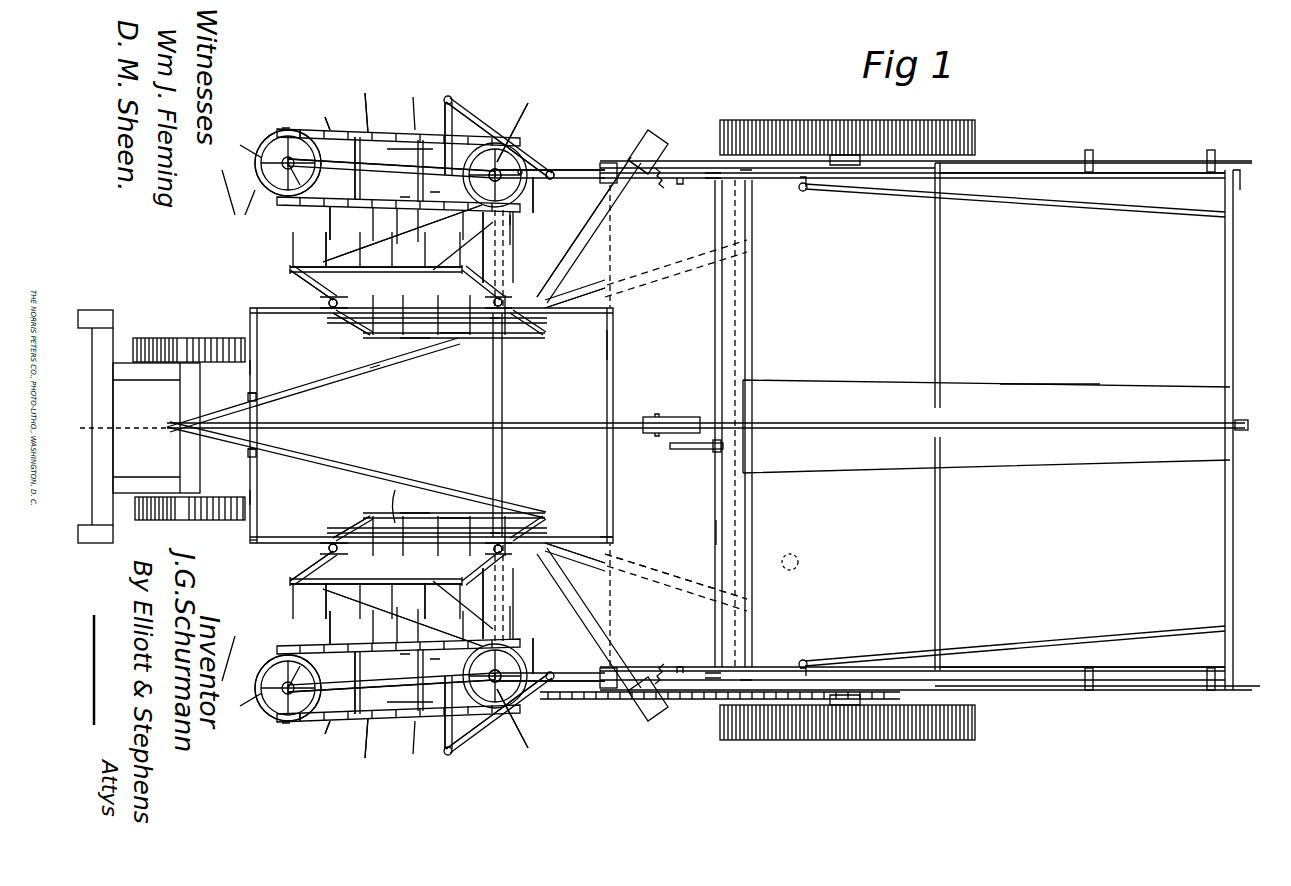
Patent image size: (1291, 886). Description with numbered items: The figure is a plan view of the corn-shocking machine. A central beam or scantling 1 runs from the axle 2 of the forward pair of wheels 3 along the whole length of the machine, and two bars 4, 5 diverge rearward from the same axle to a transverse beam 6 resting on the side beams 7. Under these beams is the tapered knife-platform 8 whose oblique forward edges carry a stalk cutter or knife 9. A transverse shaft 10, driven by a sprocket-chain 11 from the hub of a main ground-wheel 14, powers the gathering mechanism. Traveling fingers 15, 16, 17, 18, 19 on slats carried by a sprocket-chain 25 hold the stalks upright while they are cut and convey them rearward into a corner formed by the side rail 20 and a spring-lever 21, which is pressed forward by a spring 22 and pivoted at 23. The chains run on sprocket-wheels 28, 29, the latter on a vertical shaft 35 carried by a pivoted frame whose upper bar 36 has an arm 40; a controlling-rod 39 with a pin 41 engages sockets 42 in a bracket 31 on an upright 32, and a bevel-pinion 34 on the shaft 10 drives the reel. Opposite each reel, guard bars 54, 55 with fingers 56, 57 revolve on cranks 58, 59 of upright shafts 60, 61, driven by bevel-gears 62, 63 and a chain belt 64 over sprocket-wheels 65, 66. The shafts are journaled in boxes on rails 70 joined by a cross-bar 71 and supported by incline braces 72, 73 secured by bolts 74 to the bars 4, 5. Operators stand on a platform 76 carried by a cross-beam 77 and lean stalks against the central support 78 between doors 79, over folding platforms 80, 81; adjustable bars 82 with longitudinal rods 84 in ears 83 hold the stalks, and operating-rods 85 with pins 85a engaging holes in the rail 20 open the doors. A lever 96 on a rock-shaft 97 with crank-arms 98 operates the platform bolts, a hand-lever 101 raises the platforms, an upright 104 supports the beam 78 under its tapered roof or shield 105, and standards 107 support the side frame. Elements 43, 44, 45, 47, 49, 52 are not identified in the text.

The beam or scantling 1 is at (405, 430).
The axle 2 is at (188, 453).
The forward pair of wheels 3 is at (165, 350).
The scantling or bar 4 is at (380, 364).
The scantling or bar 5 is at (410, 490).
The transverse beam 6 is at (752, 570).
The side beams 7 is at (800, 160).
The knife-platform 8 is at (250, 545).
The stalk cutter or knife 9 is at (380, 258).
The shaft 10 is at (503, 395).
The sprocket-chain 11 is at (620, 701).
The main ground-wheel 14 is at (858, 125).
The traveling finger 15 is at (245, 185).
The traveling finger 16 is at (252, 148).
The traveling finger 17 is at (369, 108).
The traveling finger 18 is at (538, 200).
The traveling finger 19 is at (333, 222).
The side board or rail 20 is at (679, 184).
The spring-lever 21 is at (602, 243).
The spring 22 is at (665, 166).
The pivot 23 is at (634, 150).
The sprocket-chain 25 is at (258, 200).
The sprocket-wheels 28 is at (496, 140).
The sprocket-wheels 29 is at (265, 130).
The bracket 31 is at (526, 110).
The upright 32 is at (598, 170).
The bevel-pinion 34 is at (515, 226).
The vertical shaft 35 is at (300, 187).
The upper horizontal bar 36 is at (380, 166).
The controlling-rod 39 is at (470, 108).
The arm or lever 40 is at (446, 112).
The pin or catch 41 is at (551, 170).
The sockets 42 is at (520, 168).
The finger 43 is at (275, 115).
The finger 44 is at (285, 128).
The bar 45 is at (421, 425).
The bar 47 is at (412, 426).
The chain link 49 is at (305, 128).
The upright 52 is at (352, 183).
The bar 54 is at (430, 612).
The bar 55 is at (455, 340).
The gathering-fingers 56 is at (326, 247).
The gathering-fingers 57 is at (395, 525).
The crank 58 is at (305, 287).
The crank 59 is at (288, 268).
The upright shaft 60 is at (330, 310).
The upright shaft 61 is at (512, 292).
The bevel-gear 62 is at (500, 546).
The bevel-gear 63 is at (556, 296).
The sprocket chain belt 64 is at (420, 340).
The sprocket-wheel 65 is at (335, 322).
The sprocket-wheel 66 is at (495, 322).
The bar or rail 70 is at (603, 534).
The cross-bar 71 is at (614, 347).
The incline brace 72 is at (258, 498).
The incline brace 73 is at (256, 368).
The bolts 74 is at (258, 400).
The operator's platform 76 is at (607, 452).
The cross-beam 77 is at (625, 612).
The central support 78 is at (1120, 420).
The doors 79 is at (1234, 290).
The folding platform 80 is at (1082, 598).
The folding platform 81 is at (1082, 262).
The adjustable bar 82 is at (941, 233).
The eyes or perforated ears 83 is at (1089, 150).
The longitudinal rod 84 is at (1000, 160).
The operating-rod 85 is at (1120, 215).
The pin 85a is at (806, 192).
The lever 96 is at (695, 450).
The rock-shaft 97 is at (713, 533).
The depending crank-arm 98 is at (712, 165).
The hand-lever 101 is at (565, 422).
The upright 104 is at (1245, 418).
The roof or shield 105 is at (1047, 385).
The standards 107 is at (748, 165).